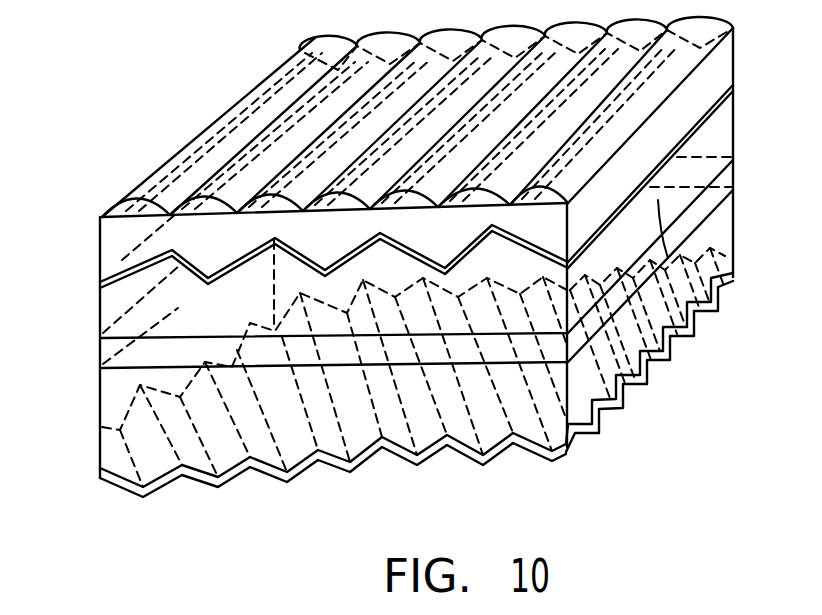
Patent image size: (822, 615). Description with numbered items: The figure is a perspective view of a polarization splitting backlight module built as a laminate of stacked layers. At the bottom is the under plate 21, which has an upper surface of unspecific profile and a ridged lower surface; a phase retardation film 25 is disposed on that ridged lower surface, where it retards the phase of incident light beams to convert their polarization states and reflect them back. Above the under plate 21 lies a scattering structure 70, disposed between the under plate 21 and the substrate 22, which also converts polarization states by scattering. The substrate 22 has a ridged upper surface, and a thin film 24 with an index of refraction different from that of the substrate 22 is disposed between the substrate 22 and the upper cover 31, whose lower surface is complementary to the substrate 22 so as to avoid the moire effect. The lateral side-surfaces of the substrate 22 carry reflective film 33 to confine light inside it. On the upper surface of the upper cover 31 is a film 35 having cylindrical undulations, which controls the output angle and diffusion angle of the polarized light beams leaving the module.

The film having cylindrical undulations 35 is at (252, 94).
The upper cover 31 is at (712, 110).
The thin film 24 is at (98, 279).
The substrate 22 is at (678, 177).
The scattering structure 70 is at (693, 217).
The under plate 21 is at (738, 253).
The phase retardation film 25 is at (100, 470).
The reflective film 33 is at (172, 327).